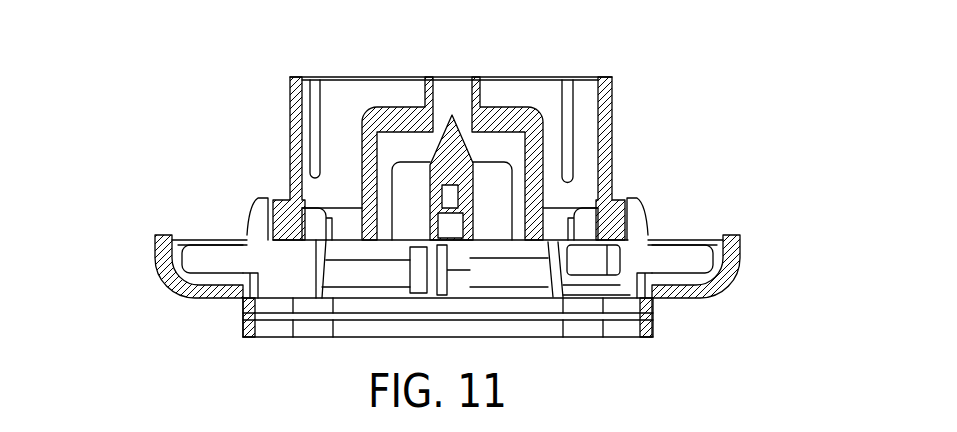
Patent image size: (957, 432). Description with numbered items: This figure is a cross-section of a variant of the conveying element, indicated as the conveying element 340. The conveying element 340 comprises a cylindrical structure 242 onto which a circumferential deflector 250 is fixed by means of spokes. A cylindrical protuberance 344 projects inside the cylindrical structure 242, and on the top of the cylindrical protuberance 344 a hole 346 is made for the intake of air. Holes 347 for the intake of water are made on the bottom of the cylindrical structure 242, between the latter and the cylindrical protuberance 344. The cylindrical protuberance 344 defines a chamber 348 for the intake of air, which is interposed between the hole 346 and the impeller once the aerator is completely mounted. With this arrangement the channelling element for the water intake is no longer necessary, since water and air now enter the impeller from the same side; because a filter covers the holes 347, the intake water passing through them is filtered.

The conveying element 340 is at (704, 119).
The circumferential deflector 250 is at (155, 234).
The cylindrical structure 242 is at (612, 177).
The hole 346 is at (432, 84).
The cylindrical protuberance 344 is at (368, 113).
The chamber 348 is at (485, 150).
The holes 347 is at (332, 232).